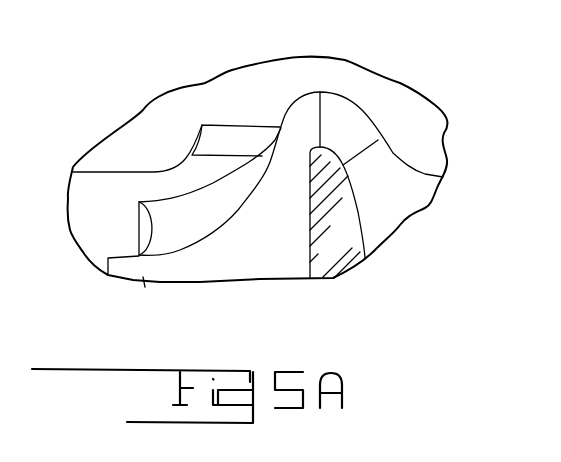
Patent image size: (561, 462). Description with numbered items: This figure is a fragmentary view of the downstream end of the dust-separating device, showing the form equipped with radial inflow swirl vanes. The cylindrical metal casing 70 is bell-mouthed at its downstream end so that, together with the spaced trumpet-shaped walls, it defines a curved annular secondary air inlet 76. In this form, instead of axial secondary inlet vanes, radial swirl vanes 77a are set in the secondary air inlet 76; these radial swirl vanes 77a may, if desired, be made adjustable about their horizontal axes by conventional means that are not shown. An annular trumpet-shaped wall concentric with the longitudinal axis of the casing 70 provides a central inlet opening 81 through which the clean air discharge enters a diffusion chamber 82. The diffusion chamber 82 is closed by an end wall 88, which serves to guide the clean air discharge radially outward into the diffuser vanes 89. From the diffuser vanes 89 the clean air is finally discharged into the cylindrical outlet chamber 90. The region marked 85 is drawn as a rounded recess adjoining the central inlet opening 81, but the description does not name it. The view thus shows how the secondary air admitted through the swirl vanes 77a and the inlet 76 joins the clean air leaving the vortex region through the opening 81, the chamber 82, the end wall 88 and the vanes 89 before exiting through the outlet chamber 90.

The cylindrical metal casing 70 is at (125, 172).
The radial swirl vanes 77a is at (233, 130).
The curved annular secondary air inlet 76 is at (204, 179).
The semicylindrical groove 85 is at (139, 218).
The central inlet opening 81 is at (145, 287).
The diffusion chamber 82 is at (255, 243).
The end wall 88 is at (309, 192).
The diffuser vanes 89 is at (355, 114).
The cylindrical outlet chamber 90 is at (388, 196).